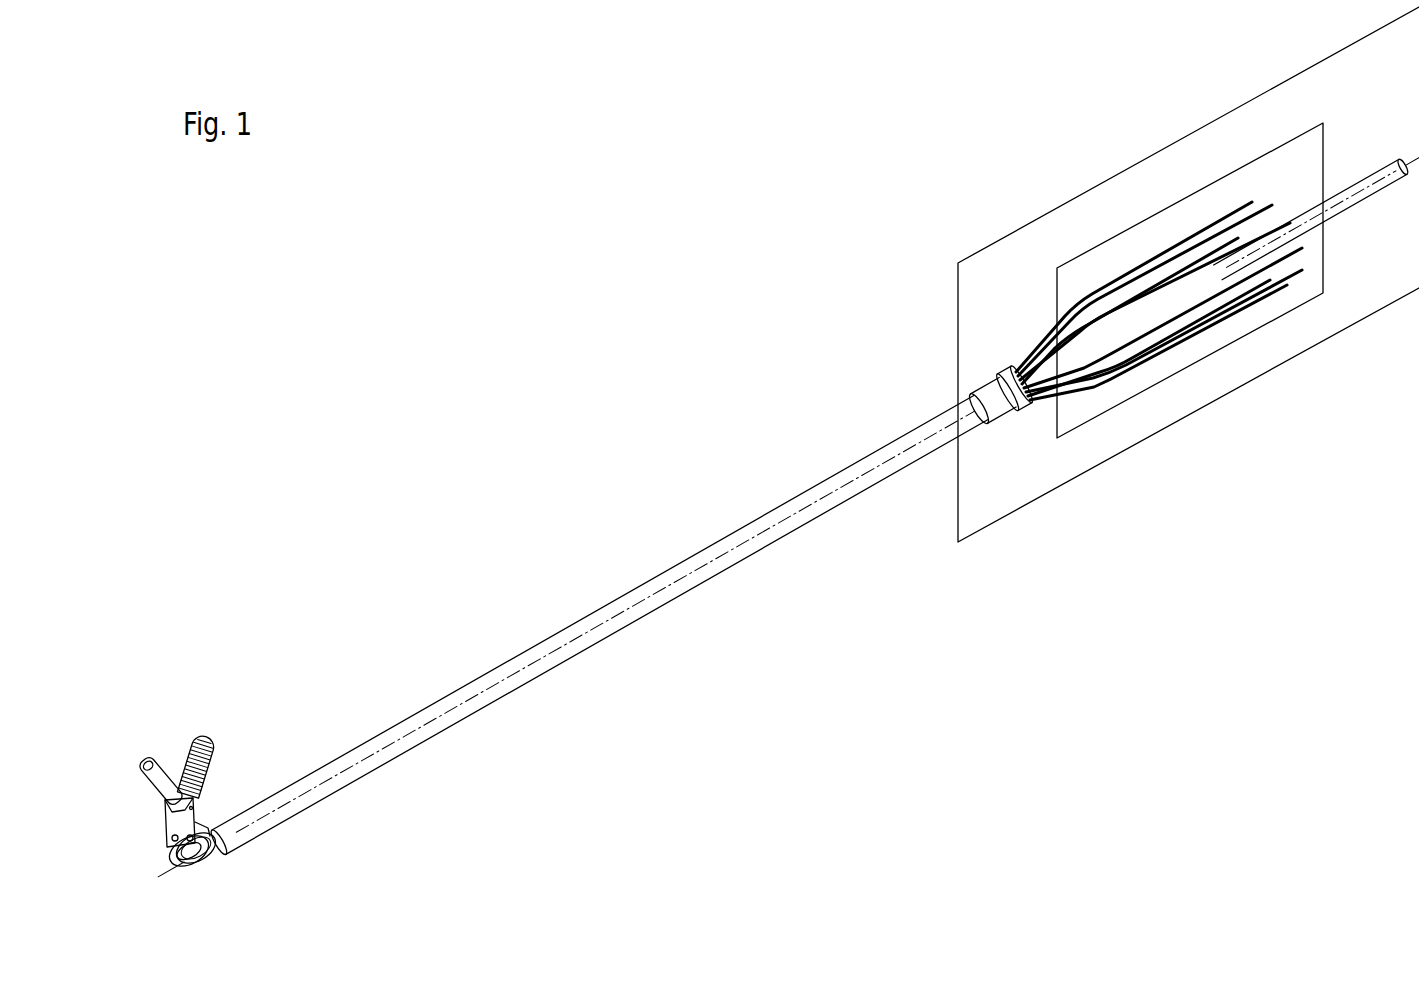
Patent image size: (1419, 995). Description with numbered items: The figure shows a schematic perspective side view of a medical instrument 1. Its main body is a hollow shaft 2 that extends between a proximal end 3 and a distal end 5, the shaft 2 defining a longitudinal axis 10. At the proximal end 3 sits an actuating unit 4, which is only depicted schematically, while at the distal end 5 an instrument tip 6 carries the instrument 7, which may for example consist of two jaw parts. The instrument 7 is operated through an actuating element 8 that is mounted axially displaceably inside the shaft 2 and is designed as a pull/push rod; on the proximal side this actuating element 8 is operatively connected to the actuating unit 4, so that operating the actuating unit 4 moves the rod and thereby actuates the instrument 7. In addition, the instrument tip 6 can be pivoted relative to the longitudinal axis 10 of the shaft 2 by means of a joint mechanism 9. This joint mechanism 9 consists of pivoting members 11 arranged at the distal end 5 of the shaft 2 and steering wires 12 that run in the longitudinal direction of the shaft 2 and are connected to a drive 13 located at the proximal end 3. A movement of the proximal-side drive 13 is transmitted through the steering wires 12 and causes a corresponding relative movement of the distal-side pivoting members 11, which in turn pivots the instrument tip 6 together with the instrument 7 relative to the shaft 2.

The medical instrument 1 is at (820, 666).
The hollow shaft 2 is at (722, 544).
The proximal end 3 is at (988, 393).
The actuating unit 4 is at (1146, 153).
The distal end 5 is at (215, 826).
The instrument tip 6 is at (132, 807).
The instrument 7 is at (205, 735).
The actuating element 8 is at (1392, 164).
The joint mechanism 9 is at (214, 882).
The longitudinal axis 10 is at (822, 485).
The pivoting members 11 is at (208, 828).
The steering wires 12 is at (1057, 322).
The drive 13 is at (1128, 221).